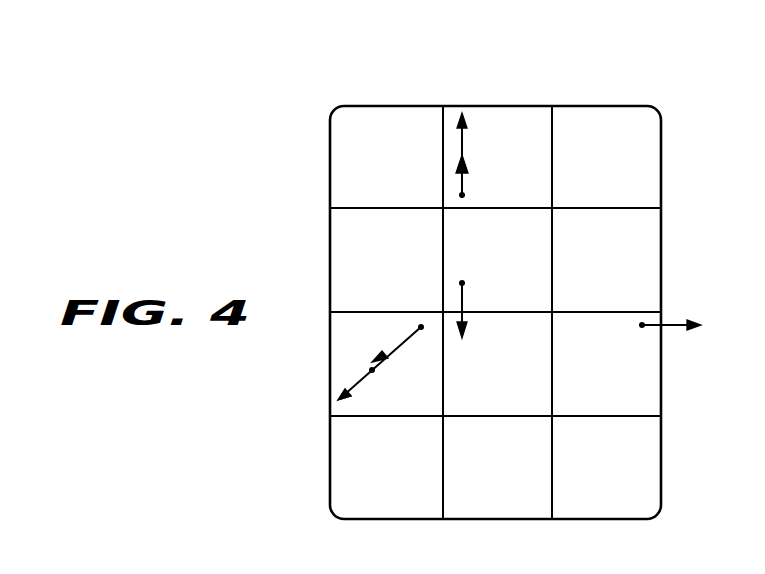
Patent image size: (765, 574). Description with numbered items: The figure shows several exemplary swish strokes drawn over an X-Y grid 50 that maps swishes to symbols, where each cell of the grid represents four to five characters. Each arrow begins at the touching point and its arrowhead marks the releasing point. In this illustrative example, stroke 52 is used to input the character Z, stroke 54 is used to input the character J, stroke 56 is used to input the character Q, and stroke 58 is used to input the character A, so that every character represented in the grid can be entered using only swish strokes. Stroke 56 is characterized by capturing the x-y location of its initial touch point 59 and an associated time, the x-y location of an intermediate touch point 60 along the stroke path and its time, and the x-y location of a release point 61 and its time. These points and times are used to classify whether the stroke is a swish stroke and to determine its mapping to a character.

The X-Y grid 50 is at (478, 78).
The stroke 52 is at (675, 318).
The stroke 54 is at (460, 299).
The stroke 56 is at (375, 350).
The stroke 58 is at (458, 133).
The initial touch point 59 is at (419, 326).
The intermediate touch point 60 is at (372, 370).
The release point 61 is at (336, 400).